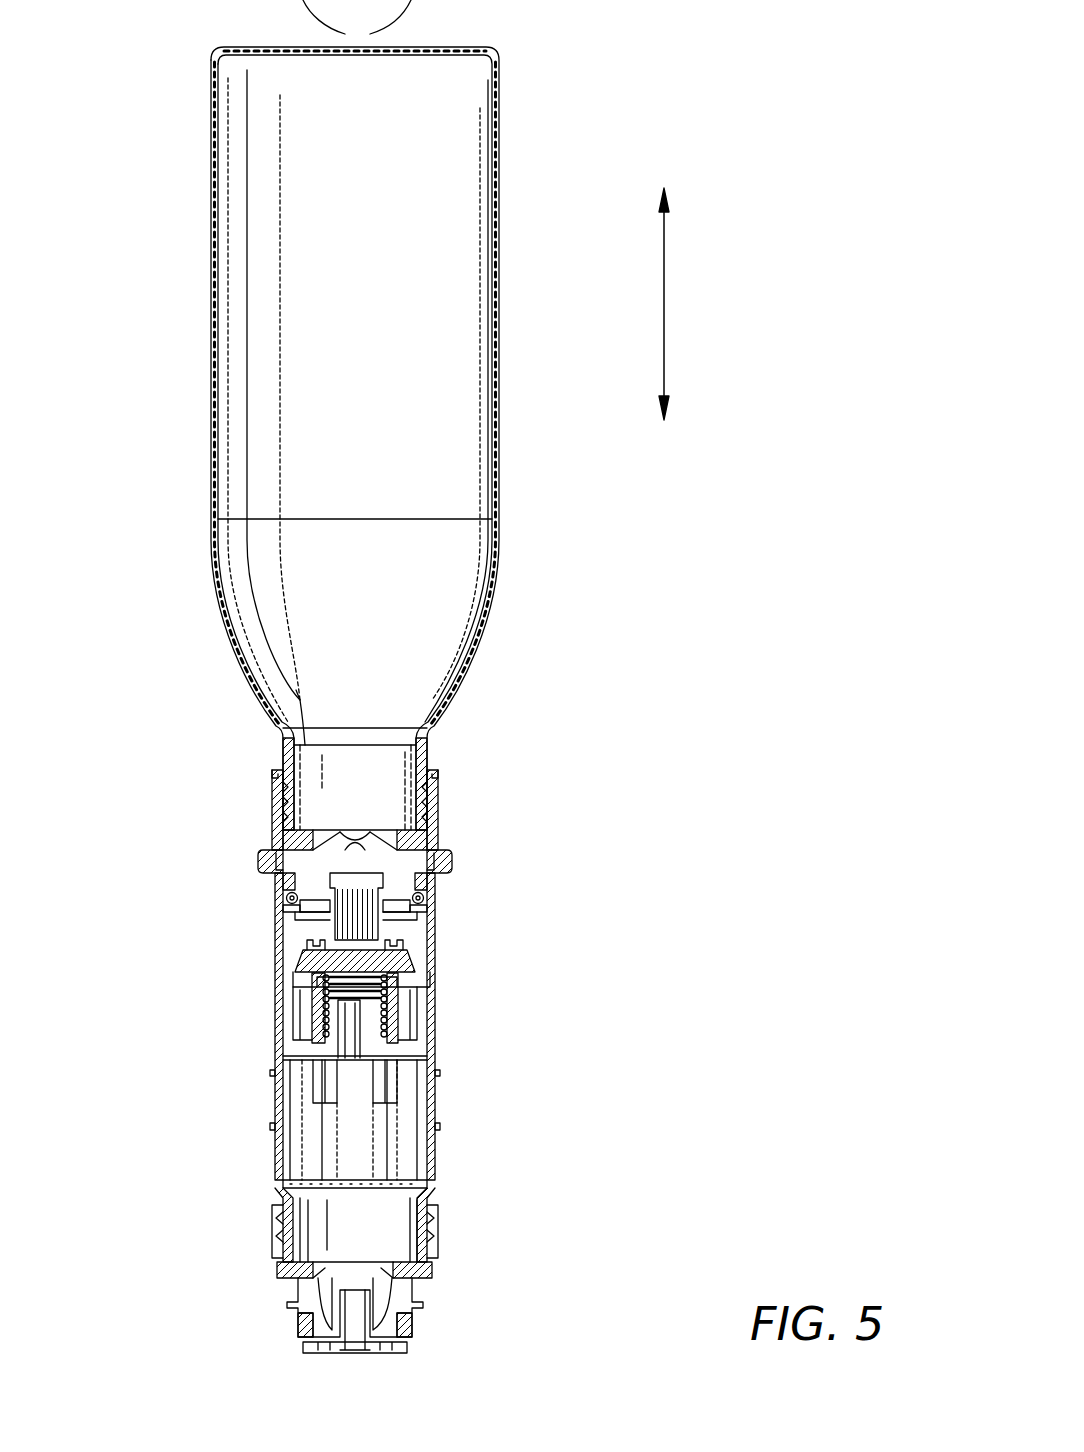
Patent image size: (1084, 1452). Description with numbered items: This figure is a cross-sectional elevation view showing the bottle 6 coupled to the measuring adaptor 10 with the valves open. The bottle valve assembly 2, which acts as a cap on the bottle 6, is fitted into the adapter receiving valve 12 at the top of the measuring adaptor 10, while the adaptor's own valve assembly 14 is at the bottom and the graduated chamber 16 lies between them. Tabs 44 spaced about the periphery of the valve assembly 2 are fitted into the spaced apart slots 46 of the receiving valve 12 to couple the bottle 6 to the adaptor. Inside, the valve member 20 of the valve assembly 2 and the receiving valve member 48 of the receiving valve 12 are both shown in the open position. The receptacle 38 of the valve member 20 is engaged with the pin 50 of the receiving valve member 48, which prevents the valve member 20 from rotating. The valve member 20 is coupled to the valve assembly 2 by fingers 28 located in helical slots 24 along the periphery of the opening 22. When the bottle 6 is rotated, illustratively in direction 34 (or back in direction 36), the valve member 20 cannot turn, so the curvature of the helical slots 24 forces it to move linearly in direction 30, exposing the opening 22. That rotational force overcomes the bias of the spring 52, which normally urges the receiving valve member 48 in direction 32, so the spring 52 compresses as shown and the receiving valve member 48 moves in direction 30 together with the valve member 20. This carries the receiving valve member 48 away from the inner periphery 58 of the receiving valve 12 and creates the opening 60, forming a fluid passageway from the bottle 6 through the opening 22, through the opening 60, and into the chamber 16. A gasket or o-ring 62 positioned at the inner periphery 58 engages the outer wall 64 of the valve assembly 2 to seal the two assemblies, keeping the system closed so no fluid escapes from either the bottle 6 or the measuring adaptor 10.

The valve assembly 2 is at (452, 785).
The bottle 6 is at (192, 337).
The measuring adaptor 10 is at (490, 1050).
The adapter receiving valve 12 is at (240, 872).
The valve assembly 14 is at (450, 1255).
The graduated chamber 16 is at (272, 1108).
The valve member 20 is at (385, 920).
The opening 22 is at (393, 822).
The helical slots 24 is at (368, 840).
The fingers 28 is at (324, 870).
The direction 30 is at (668, 393).
The direction 32 is at (668, 207).
The direction 34 is at (369, 35).
The direction 36 is at (346, 35).
The receptacle 38 is at (412, 893).
The tabs 44 is at (278, 878).
The slots 46 is at (292, 862).
The receiving valve member 48 is at (405, 968).
The pin 50 is at (315, 946).
The spring 52 is at (323, 1022).
The inner periphery 58 is at (405, 907).
The opening 60 is at (312, 918).
The gasket or o-ring 62 is at (284, 900).
The outer wall 64 is at (300, 920).